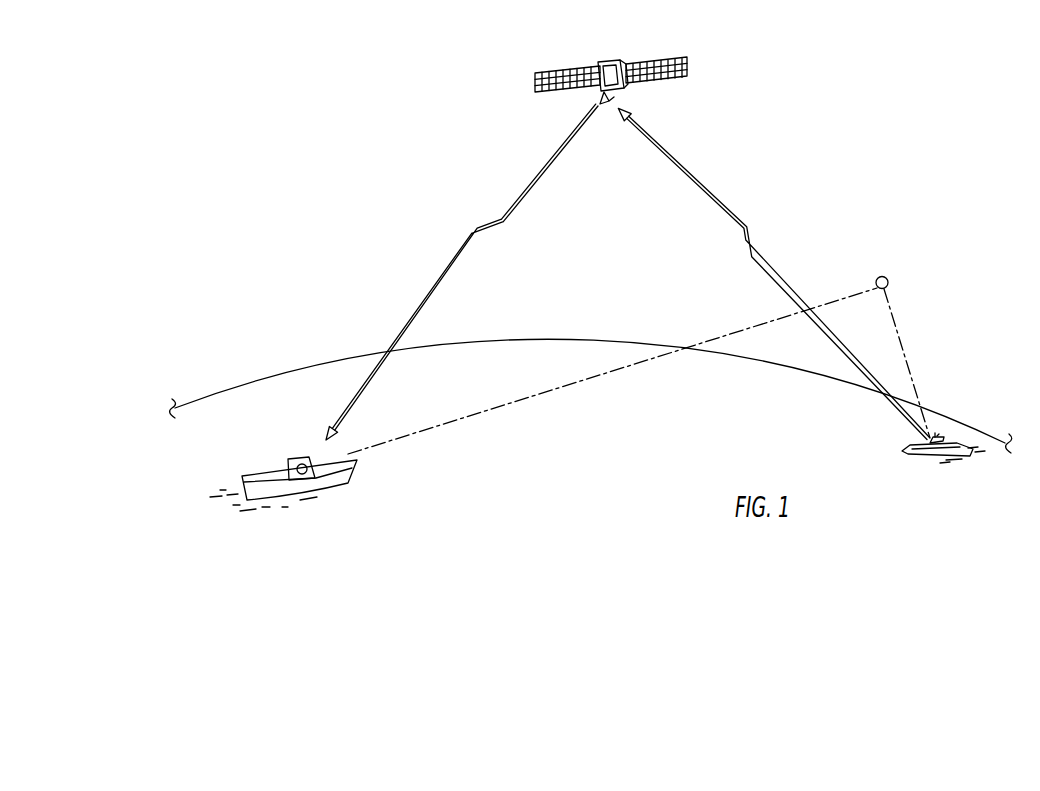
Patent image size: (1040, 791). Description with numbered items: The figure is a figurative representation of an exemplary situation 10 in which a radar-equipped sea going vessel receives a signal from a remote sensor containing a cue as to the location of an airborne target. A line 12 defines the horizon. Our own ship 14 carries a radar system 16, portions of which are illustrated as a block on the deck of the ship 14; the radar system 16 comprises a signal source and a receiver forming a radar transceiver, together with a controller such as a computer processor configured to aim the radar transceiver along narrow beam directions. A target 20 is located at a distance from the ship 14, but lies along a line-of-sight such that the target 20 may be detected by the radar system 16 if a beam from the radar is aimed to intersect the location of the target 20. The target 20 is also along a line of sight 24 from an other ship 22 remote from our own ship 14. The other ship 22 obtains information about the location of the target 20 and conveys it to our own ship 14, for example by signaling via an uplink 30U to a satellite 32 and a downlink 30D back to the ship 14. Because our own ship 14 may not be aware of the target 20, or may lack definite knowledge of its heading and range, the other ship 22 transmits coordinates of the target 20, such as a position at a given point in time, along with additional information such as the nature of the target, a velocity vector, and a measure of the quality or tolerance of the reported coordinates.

The situation 10 is at (676, 436).
The line 12 is at (508, 340).
The ship 14 is at (272, 476).
The radar system 16 is at (302, 457).
The target 20 is at (887, 278).
The ship 22 is at (922, 447).
The line of sight 24 is at (905, 349).
The downlink 30D is at (520, 189).
The uplink 30U is at (715, 208).
The satellite 32 is at (611, 59).